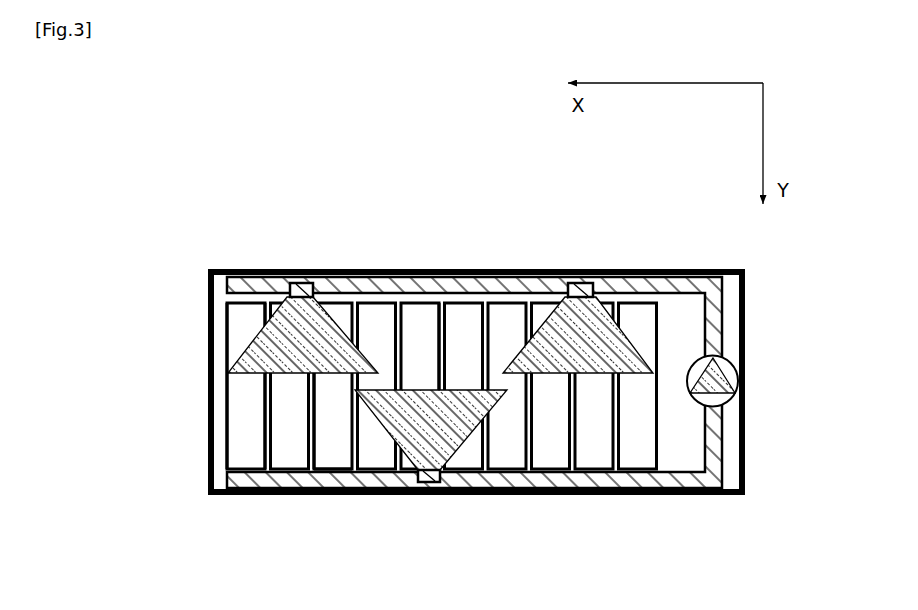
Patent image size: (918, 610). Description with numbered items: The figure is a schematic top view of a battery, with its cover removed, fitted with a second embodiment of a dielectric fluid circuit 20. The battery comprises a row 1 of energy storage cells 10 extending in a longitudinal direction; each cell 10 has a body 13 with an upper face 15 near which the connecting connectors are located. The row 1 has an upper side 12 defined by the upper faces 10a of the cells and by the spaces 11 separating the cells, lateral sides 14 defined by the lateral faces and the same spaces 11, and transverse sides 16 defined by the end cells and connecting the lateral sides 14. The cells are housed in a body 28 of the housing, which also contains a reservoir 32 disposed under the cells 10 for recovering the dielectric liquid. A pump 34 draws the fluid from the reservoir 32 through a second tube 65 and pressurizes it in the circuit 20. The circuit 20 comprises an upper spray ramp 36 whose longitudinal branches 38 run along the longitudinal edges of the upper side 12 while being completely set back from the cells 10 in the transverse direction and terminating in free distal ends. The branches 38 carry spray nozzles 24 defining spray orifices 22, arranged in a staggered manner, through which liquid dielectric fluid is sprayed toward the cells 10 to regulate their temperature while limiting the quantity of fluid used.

The row of energy storage cells 1 is at (206, 383).
The energy storage cell 10 is at (442, 322).
The upper face of the cell 10a is at (333, 436).
The space separating the cells 11 is at (444, 323).
The upper side of the row 12 is at (269, 433).
The body of the cell 13 is at (534, 199).
The lateral side of the row 14 is at (634, 296).
The upper face of the body 15 is at (333, 436).
The transverse side of the row 16 is at (227, 332).
The dielectric fluid circuit 20 is at (358, 270).
The spray orifice 22 is at (298, 308).
The spray nozzle 24 is at (249, 305).
The body of the housing 28 is at (662, 491).
The reservoir 32 is at (668, 437).
The pump 34 is at (747, 372).
The spray ramp 36 is at (470, 496).
The longitudinal branch 38 is at (520, 377).
The second tube 65 is at (712, 460).